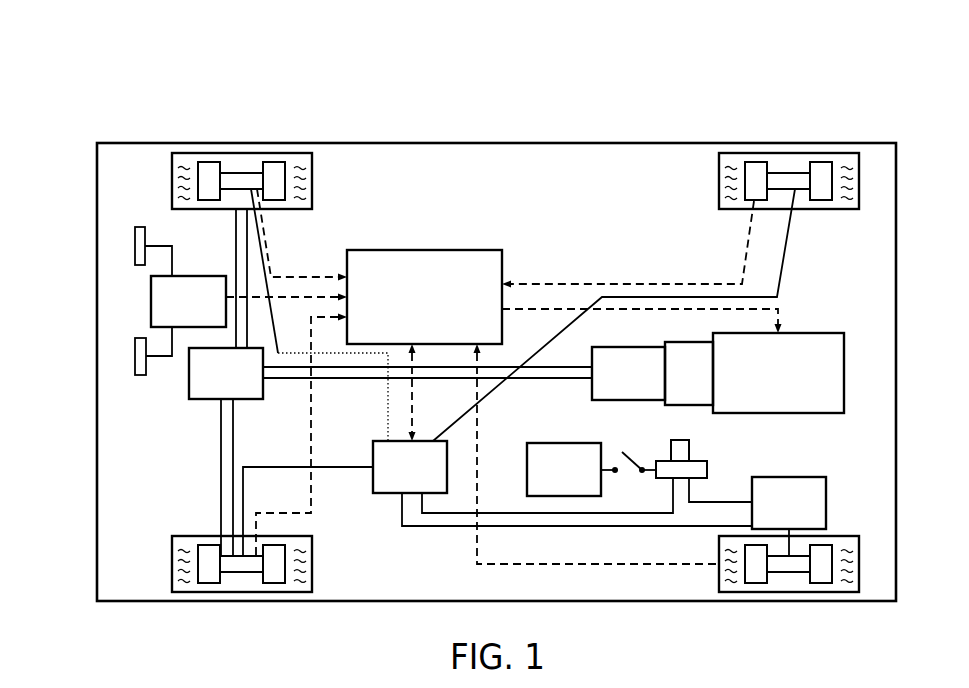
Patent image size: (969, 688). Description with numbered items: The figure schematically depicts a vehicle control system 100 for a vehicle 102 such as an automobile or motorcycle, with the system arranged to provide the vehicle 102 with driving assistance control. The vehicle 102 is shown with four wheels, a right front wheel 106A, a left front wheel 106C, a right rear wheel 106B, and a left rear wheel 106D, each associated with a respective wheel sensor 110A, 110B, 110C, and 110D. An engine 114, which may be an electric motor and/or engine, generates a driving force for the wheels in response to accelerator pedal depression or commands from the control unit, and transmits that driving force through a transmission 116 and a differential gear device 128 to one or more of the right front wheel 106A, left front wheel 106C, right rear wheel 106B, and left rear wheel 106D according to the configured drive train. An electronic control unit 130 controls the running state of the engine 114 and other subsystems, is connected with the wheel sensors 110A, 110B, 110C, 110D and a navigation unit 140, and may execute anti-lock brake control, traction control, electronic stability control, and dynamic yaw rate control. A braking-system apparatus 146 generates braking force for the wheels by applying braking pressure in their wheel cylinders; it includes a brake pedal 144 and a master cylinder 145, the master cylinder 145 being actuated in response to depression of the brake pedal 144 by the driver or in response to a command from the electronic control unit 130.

The vehicle control system 100 is at (461, 325).
The vehicle 102 is at (459, 372).
The right front wheel 106A is at (172, 577).
The right rear wheel 106B is at (855, 575).
The left front wheel 106C is at (172, 168).
The left rear wheel 106D is at (858, 168).
The wheel sensor 110A is at (240, 572).
The wheel sensor 110B is at (789, 572).
The wheel sensor 110C is at (242, 172).
The wheel sensor 110D is at (789, 172).
The engine 114 is at (799, 386).
The transmission 116 is at (649, 386).
The differential gear device 128 is at (248, 385).
The electronic control unit 130 is at (446, 309).
The navigation unit 140 is at (210, 313).
The brake pedal 144 is at (586, 481).
The master cylinder 145 is at (811, 514).
The braking-system apparatus 146 is at (432, 479).